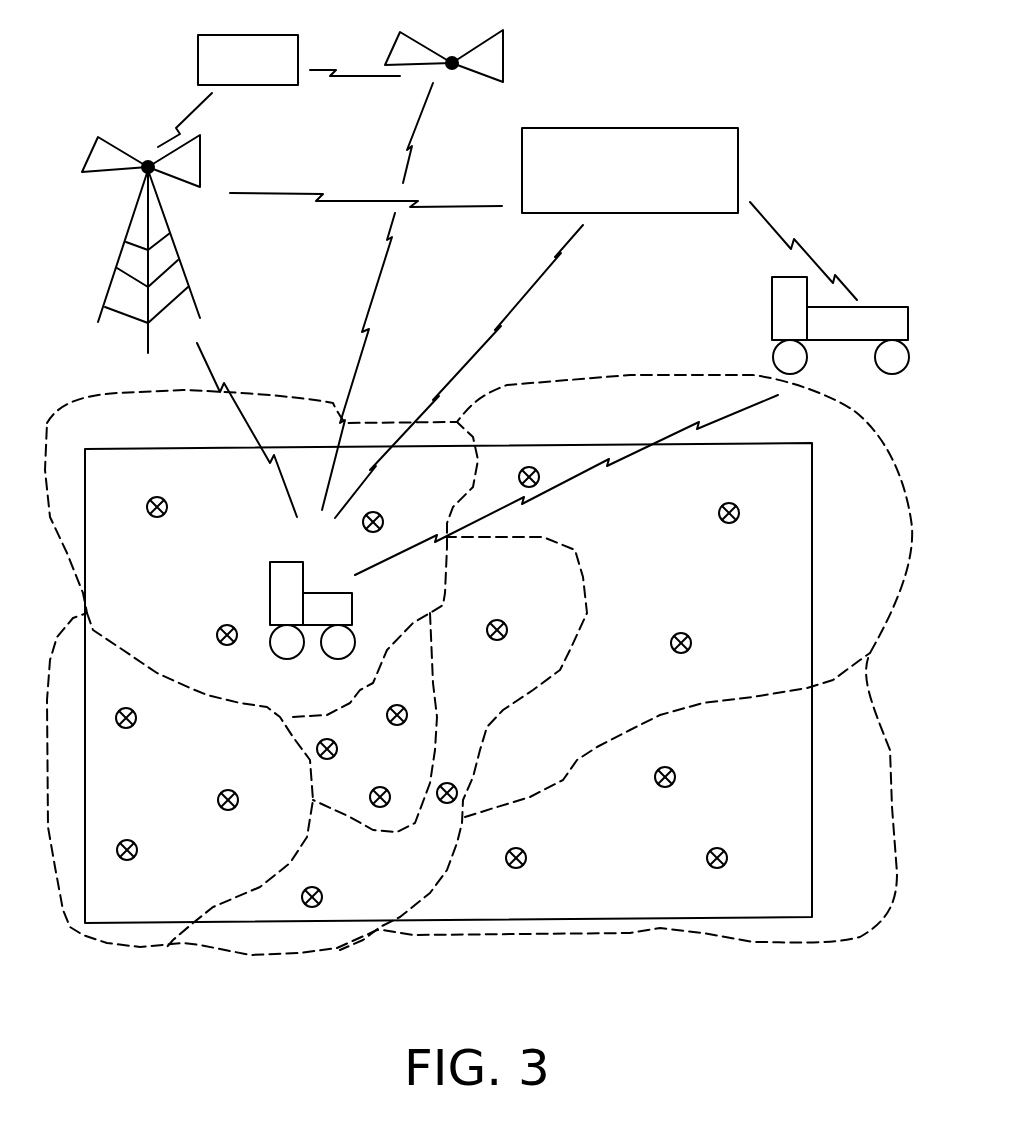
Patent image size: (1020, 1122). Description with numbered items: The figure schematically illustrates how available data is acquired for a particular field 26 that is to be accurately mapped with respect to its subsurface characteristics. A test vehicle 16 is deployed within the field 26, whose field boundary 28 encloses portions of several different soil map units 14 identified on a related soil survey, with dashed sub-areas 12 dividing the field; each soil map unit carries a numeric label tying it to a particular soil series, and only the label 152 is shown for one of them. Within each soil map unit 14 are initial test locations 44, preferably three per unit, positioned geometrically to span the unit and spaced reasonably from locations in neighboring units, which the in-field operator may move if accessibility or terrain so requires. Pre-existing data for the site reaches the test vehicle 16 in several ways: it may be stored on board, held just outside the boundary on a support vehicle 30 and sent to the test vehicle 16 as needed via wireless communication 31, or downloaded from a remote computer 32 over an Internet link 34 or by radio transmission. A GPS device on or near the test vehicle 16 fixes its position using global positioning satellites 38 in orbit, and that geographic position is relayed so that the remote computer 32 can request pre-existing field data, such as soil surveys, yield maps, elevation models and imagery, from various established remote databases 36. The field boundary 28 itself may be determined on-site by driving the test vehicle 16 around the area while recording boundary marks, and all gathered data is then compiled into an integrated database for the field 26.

The sub-area / zone of the field 12 is at (203, 693).
The soil map unit 14 is at (245, 530).
The test vehicle 16 is at (355, 608).
The field 26 is at (199, 994).
The field boundary 28 is at (812, 580).
The support vehicle 30 is at (772, 308).
The wireless communication 31 is at (582, 485).
The remote computer 32 is at (615, 186).
The Internet link 34 is at (530, 292).
The remote databases 36 is at (233, 74).
The global positioning satellites 38 is at (452, 70).
The initial test locations 44 is at (720, 508).
The numeric label 152 is at (180, 580).